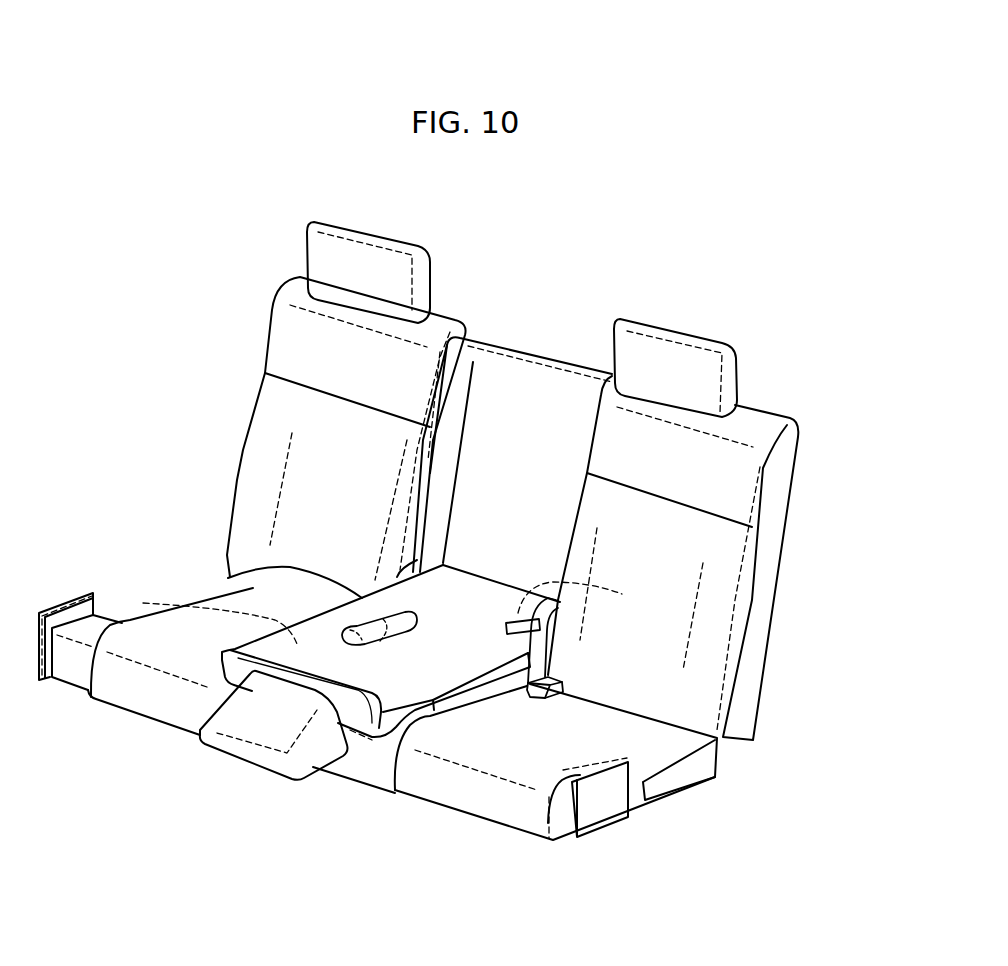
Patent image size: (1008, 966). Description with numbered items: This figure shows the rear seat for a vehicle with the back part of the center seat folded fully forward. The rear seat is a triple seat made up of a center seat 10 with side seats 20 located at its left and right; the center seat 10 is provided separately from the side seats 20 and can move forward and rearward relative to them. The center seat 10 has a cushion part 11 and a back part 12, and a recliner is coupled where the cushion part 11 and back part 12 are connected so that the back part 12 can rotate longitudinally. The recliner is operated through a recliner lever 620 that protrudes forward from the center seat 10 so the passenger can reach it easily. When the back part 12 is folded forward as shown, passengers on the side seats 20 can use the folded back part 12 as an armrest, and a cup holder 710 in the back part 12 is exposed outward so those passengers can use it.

The center seat 10 is at (329, 779).
The cushion part 11 is at (368, 775).
The back part 12 is at (300, 647).
The side seats 20 is at (127, 713).
The recliner lever 620 is at (622, 594).
The cup holder 710 is at (392, 620).